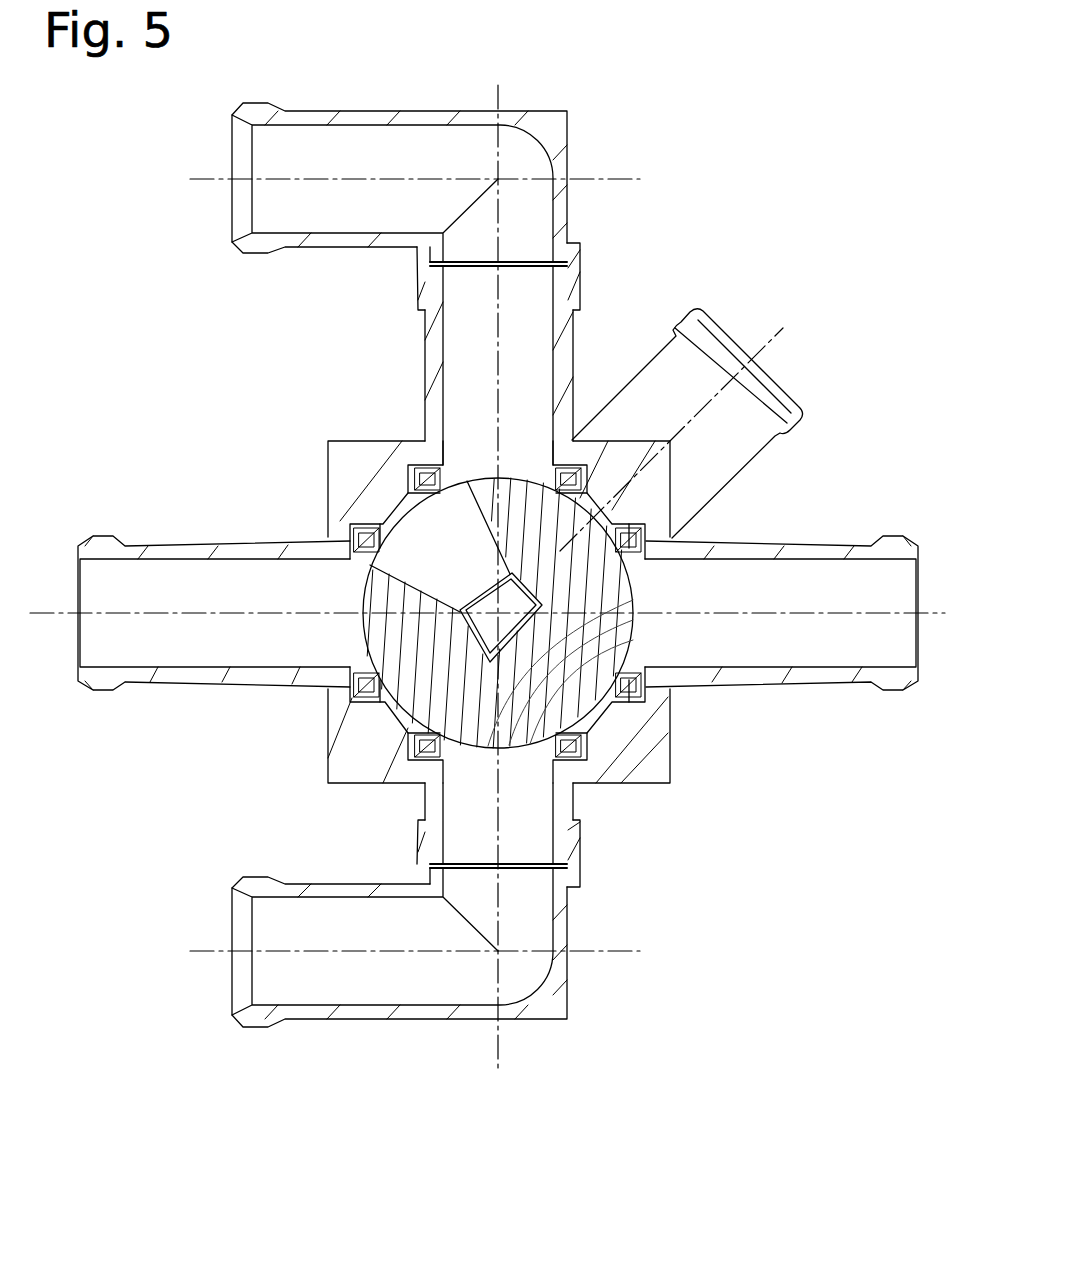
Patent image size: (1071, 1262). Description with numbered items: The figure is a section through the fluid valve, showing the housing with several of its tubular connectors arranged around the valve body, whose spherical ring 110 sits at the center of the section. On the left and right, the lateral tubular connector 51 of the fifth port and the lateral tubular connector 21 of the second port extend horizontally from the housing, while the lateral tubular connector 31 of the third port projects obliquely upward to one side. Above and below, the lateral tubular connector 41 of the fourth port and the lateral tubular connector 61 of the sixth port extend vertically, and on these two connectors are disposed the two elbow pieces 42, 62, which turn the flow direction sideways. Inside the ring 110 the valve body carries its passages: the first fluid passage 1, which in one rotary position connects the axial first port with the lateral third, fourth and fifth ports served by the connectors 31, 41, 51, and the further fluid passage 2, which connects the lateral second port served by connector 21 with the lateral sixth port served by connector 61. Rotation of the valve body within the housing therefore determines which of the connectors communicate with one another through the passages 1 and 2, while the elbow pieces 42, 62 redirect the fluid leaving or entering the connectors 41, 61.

The first fluid passage 1 is at (454, 560).
The further fluid passage 2 is at (542, 658).
The ring 110 is at (395, 645).
The lateral tubular connector 21 is at (748, 683).
The lateral tubular connector 31 is at (730, 425).
The lateral tubular connector 41 is at (415, 398).
The elbow piece 42 is at (383, 110).
The lateral tubular connector 51 is at (232, 540).
The lateral tubular connector 61 is at (570, 798).
The elbow piece 62 is at (440, 1022).